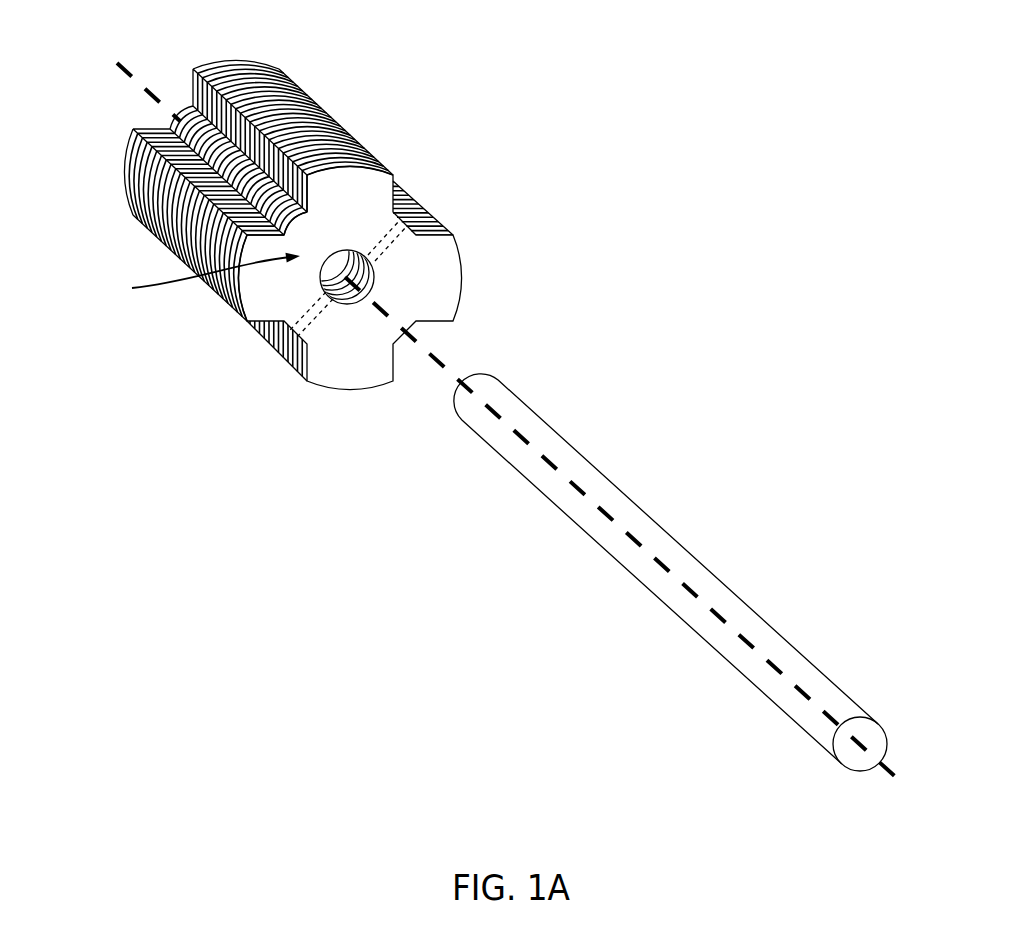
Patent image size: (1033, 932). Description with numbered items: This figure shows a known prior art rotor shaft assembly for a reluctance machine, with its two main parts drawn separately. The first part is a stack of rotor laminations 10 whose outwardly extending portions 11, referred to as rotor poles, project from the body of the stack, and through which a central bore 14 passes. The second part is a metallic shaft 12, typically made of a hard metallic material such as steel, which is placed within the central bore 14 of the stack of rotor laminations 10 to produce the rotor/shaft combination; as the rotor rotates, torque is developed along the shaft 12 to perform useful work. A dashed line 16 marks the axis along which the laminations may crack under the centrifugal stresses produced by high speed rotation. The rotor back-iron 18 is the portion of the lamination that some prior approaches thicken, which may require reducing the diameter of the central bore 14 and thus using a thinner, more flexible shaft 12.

The stack of rotor laminations 10 is at (110, 86).
The outwardly extending portions (rotor poles) 11 is at (122, 222).
The metallic shaft 12 is at (558, 530).
The bore 14 is at (374, 283).
The dashed line (crack axis) 16 is at (383, 238).
The rotor back-iron 18 is at (200, 279).